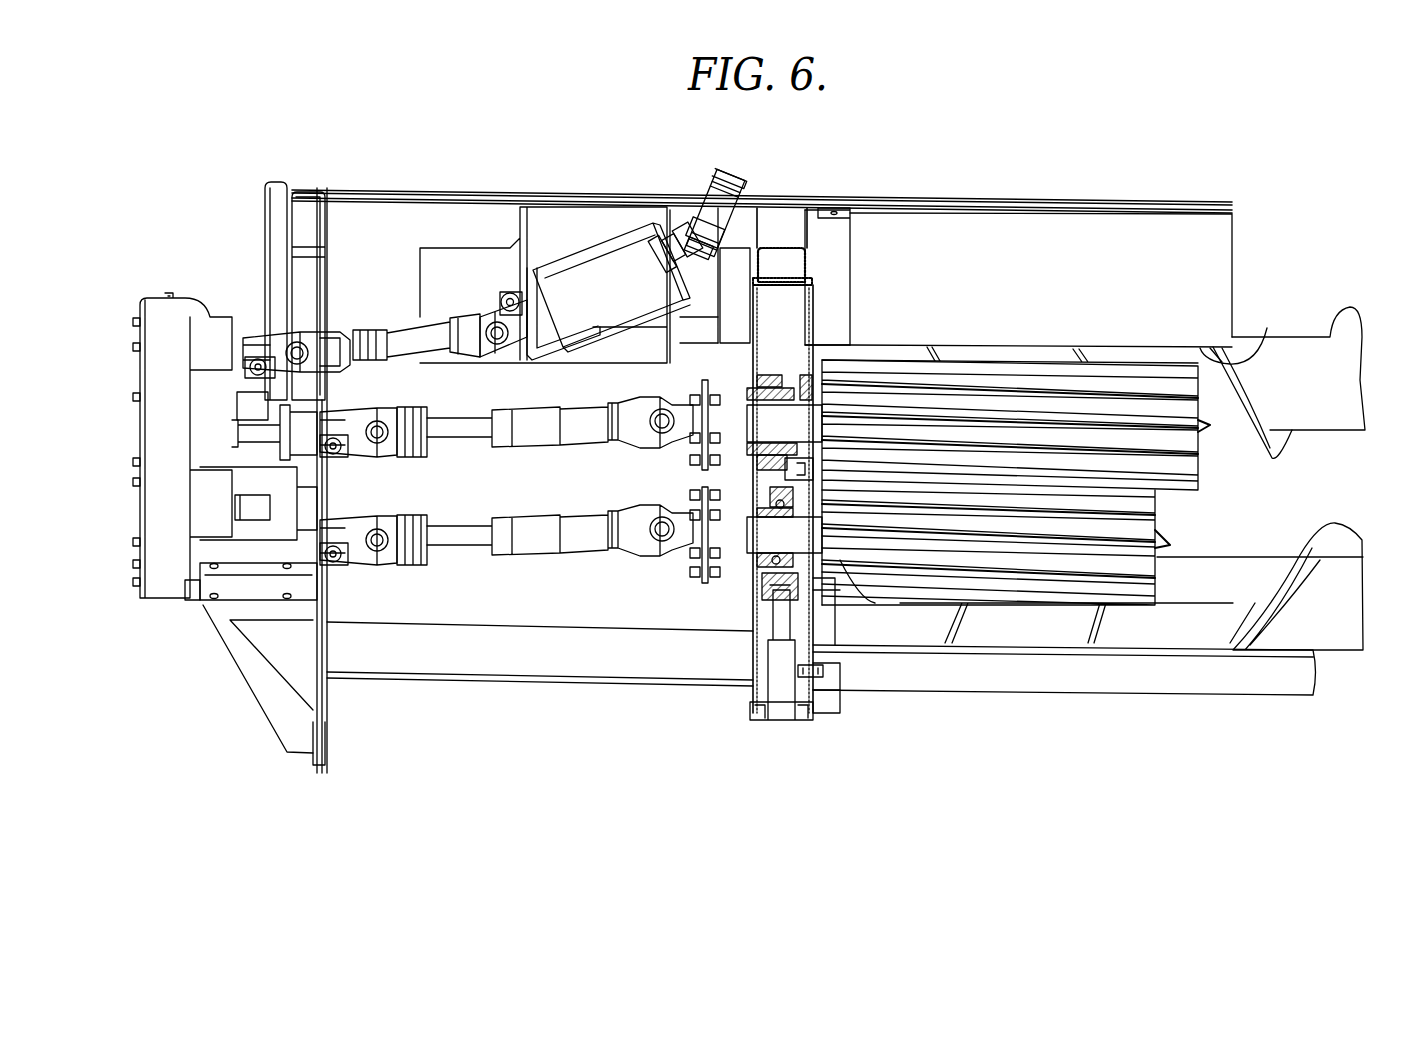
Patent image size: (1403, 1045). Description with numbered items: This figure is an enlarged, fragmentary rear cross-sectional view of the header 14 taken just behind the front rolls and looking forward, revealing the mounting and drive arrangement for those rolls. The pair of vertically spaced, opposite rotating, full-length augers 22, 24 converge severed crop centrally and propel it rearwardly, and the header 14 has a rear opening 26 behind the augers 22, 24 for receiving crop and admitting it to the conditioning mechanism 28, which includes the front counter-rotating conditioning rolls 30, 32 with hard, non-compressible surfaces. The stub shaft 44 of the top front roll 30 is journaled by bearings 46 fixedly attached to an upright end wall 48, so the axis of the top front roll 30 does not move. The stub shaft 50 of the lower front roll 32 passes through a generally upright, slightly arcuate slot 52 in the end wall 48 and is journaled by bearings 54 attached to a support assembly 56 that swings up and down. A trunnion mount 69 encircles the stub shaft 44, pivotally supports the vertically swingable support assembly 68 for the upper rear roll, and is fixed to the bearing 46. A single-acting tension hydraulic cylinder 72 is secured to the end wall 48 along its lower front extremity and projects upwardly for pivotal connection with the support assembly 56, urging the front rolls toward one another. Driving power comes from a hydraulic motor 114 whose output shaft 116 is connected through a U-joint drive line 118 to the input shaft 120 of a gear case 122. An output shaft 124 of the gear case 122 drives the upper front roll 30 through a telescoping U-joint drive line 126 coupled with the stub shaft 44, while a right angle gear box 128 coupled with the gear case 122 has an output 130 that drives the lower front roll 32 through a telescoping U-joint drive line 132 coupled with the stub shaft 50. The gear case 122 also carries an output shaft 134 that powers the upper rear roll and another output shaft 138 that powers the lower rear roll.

The header 14 is at (925, 185).
The auger 22 is at (1343, 320).
The auger 24 is at (1338, 538).
The rear opening 26 is at (1267, 330).
The conditioning mechanism 28 is at (1010, 345).
The top front conditioning roll 30 is at (1205, 475).
The lower front conditioning roll 32 is at (1160, 572).
The stub shaft 44 is at (752, 405).
The bearings 46 is at (798, 363).
The upright end wall 48 is at (812, 298).
The stub shaft 50 is at (755, 538).
The upright slot 52 is at (835, 585).
The bearings 54 is at (770, 497).
The support assembly 56 is at (765, 600).
The support assembly 68 is at (768, 374).
The trunnion mount 69 is at (748, 450).
The tension hydraulic cylinder 72 is at (786, 712).
The hydraulic motor 114 is at (612, 250).
The output shaft 116 is at (530, 330).
The drive shaft 118 is at (365, 338).
The input shaft 120 is at (242, 340).
The gear case 122 is at (180, 305).
The output shaft 124 is at (240, 428).
The telescoping U-joint drive line 126 is at (470, 418).
The gear box 128 is at (292, 476).
The output 130 is at (343, 552).
The telescoping U-joint drive line 132 is at (466, 527).
The output shaft 134 is at (250, 390).
The output shaft 138 is at (242, 512).